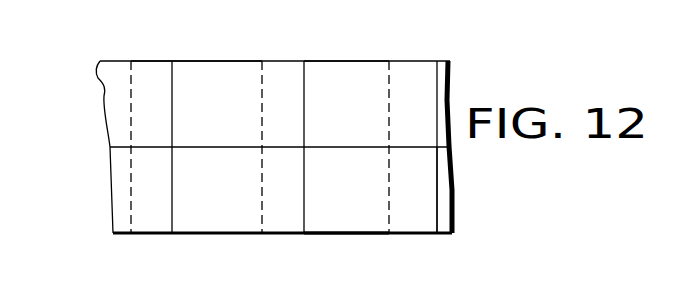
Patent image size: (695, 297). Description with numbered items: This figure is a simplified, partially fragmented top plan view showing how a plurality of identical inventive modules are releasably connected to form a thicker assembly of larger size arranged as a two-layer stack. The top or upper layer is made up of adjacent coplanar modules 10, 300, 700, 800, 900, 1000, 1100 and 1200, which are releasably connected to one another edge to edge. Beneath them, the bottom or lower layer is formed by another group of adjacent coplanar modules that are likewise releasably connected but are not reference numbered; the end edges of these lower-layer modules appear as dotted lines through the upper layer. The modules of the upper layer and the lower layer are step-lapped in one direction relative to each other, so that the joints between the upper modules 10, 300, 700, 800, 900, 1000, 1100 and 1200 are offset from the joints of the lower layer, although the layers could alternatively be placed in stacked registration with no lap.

The module 10 is at (246, 237).
The module 300 is at (366, 237).
The module 700 is at (105, 208).
The module 800 is at (152, 58).
The module 900 is at (211, 57).
The module 1000 is at (362, 58).
The module 1100 is at (458, 210).
The module 1200 is at (455, 72).